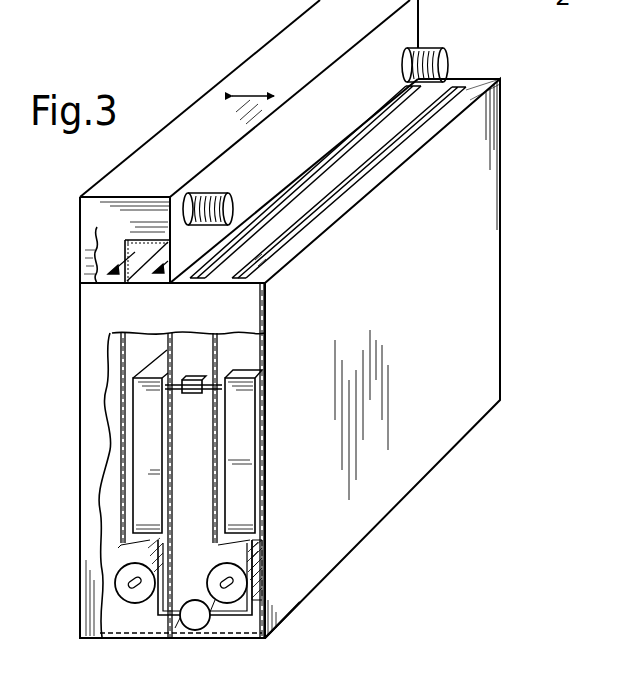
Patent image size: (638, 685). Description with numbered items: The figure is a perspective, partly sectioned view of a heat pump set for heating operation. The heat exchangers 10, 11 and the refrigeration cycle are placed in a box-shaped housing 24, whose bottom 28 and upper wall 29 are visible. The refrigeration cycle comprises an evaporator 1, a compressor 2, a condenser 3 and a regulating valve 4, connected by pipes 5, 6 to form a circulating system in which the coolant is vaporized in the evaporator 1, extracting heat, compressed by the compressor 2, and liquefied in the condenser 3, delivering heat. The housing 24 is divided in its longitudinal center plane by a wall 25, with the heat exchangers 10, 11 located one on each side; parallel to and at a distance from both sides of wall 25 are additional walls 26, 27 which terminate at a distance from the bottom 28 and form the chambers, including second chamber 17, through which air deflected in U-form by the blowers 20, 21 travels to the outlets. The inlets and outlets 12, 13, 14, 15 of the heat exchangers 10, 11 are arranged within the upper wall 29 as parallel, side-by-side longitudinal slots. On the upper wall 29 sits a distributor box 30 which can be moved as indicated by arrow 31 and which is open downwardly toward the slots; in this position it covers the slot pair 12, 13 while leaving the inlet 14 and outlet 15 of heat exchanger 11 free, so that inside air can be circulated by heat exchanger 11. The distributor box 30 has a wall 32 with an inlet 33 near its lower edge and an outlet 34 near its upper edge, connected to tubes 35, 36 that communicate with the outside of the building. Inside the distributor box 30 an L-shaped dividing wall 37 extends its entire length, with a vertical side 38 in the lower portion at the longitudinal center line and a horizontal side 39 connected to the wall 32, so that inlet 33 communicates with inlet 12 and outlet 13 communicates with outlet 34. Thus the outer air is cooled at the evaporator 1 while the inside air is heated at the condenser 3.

The evaporator 1 is at (140, 402).
The compressor 2 is at (195, 600).
The condenser 3 is at (243, 480).
The regulating valve 4 is at (193, 395).
The pipe 5 is at (160, 612).
The pipe 6 is at (267, 608).
The heat exchanger 10 is at (96, 490).
The heat exchanger 11 is at (268, 440).
The inlet 12 is at (160, 285).
The outlet 13 is at (116, 285).
The inlet 14 is at (343, 186).
The outlet 15 is at (263, 217).
The second chamber 17 is at (110, 446).
The blower 20 is at (125, 568).
The blower 21 is at (248, 558).
The housing 24 is at (503, 207).
The wall 25 is at (183, 334).
The additional wall 26 is at (120, 356).
The additional wall 27 is at (248, 348).
The bottom 28 is at (300, 607).
The upper wall 29 is at (400, 160).
The distributor box 30 is at (355, 31).
The arrow 31 is at (255, 95).
The wall 32 is at (322, 97).
The inlet 33 is at (401, 68).
The outlet 34 is at (170, 198).
The tube 35 is at (432, 50).
The tube 36 is at (234, 200).
The L-shaped dividing wall 37 is at (98, 230).
The vertical side 38 is at (128, 252).
The horizontal side 39 is at (153, 226).